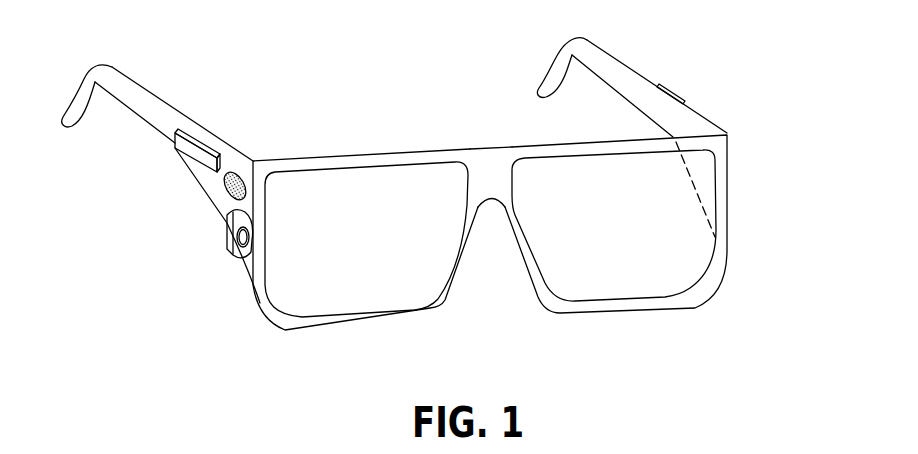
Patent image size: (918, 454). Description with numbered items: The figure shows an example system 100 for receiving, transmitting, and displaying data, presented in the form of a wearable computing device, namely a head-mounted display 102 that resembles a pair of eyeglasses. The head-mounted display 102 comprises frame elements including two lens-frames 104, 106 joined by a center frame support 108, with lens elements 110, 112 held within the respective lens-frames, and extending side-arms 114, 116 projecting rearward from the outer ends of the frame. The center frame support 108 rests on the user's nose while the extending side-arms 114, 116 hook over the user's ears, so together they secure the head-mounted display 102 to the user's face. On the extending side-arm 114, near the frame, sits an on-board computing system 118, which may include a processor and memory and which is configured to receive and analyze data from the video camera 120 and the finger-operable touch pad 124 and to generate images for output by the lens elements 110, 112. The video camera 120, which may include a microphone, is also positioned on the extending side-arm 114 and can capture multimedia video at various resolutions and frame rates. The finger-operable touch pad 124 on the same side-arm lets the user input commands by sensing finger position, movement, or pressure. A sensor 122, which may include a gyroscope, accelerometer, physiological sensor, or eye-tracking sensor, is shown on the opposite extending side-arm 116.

The system 100 is at (740, 292).
The head-mounted display 102 is at (347, 68).
The lens-frame 104 is at (340, 162).
The lens-frame 106 is at (560, 145).
The center frame support 108 is at (490, 168).
The lens element 110 is at (317, 297).
The lens element 112 is at (632, 282).
The extending side-arm 114 is at (193, 128).
The extending side-arm 116 is at (637, 75).
The on-board computing system 118 is at (192, 148).
The video camera 120 is at (225, 228).
The sensor 122 is at (673, 93).
The finger-operable touch pad 124 is at (225, 187).